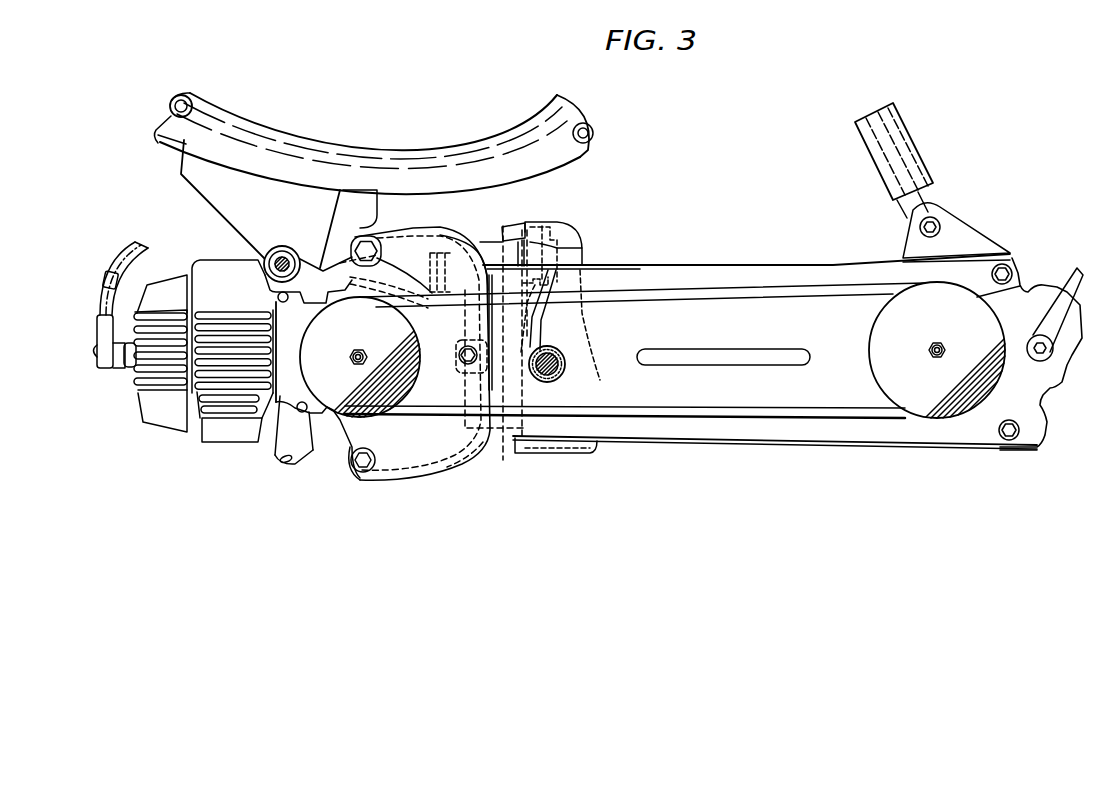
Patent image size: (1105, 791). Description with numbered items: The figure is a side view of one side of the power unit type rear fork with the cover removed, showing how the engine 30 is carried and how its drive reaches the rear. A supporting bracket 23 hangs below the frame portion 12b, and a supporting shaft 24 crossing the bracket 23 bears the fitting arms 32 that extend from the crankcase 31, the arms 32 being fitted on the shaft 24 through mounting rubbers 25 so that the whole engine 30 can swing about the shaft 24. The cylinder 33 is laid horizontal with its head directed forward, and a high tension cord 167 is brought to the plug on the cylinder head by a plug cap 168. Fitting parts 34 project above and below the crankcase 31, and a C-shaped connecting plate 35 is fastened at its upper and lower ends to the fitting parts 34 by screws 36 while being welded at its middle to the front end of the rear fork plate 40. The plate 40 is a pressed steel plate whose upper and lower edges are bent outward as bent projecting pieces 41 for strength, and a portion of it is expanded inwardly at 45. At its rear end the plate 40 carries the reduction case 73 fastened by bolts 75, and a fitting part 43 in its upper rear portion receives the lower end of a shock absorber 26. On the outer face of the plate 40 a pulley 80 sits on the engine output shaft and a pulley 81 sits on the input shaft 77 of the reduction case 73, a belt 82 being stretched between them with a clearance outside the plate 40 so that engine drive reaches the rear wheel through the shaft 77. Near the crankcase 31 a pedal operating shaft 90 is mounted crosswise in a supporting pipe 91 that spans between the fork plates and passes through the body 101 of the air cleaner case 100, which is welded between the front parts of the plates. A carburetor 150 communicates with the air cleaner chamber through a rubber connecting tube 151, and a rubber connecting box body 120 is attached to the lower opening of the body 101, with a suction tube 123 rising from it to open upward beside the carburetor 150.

The frame portion 12b is at (382, 162).
The supporting bracket 23 is at (268, 203).
The supporting shaft 24 is at (290, 252).
The mounting rubbers 25 is at (263, 255).
The shock absorbers 26 is at (903, 157).
The engine 30 is at (237, 427).
The crankcase 31 is at (330, 392).
The fitting arms 32 is at (338, 190).
The cylinder 33 is at (223, 380).
The fitting parts 34 is at (432, 238).
The connecting plates 35 is at (449, 455).
The screws 36 is at (374, 236).
The rear fork plate 40 is at (817, 390).
The bent projecting pieces 41 is at (709, 274).
The fitting part 43 is at (957, 237).
The expanded plate portion 45 is at (743, 360).
The reduction case 73 is at (1040, 385).
The bolts 75 is at (1004, 270).
The input shaft 77 is at (933, 360).
The pulley 80 is at (314, 433).
The pulley 81 is at (947, 407).
The belt 82 is at (630, 410).
The pedal operating shaft 90 is at (562, 373).
The supporting pipe 91 is at (562, 346).
The air cleaner case 100 is at (590, 248).
The body 101 is at (567, 224).
The connecting box body 120 is at (497, 430).
The suction tube 123 is at (510, 228).
The carburetor 150 is at (485, 243).
The connecting tube 151 is at (583, 233).
The high tension cord 167 is at (102, 293).
The plug cap 168 is at (115, 362).